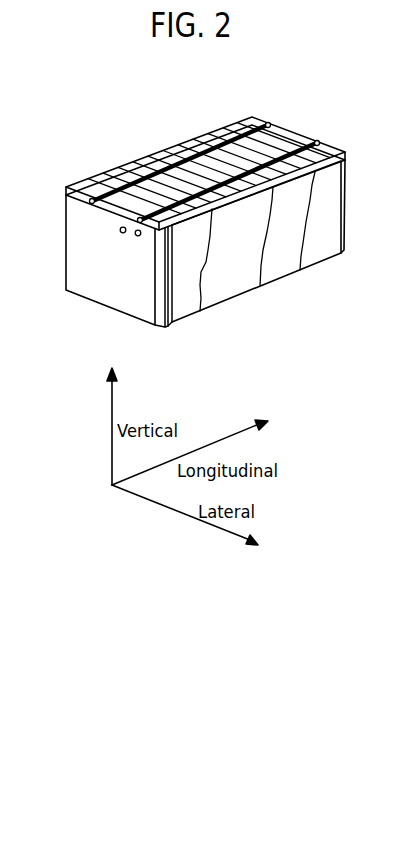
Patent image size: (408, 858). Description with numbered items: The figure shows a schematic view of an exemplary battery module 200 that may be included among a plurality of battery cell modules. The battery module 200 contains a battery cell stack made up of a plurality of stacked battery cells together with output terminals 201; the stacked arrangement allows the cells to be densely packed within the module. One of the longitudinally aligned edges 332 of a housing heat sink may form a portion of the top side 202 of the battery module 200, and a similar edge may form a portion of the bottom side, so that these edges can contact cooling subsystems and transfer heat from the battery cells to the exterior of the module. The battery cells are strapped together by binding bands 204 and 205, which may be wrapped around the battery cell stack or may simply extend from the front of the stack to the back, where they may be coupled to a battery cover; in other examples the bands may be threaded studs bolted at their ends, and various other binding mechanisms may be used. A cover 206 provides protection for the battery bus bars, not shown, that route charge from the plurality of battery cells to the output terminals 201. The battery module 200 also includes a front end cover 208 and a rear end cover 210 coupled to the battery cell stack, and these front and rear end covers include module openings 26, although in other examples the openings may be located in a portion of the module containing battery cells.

The battery module 200 is at (123, 109).
The module openings 26 is at (140, 218).
The top side 202 is at (213, 164).
The binding band 204 is at (262, 135).
The rear end cover 210 is at (345, 150).
The binding band 205 is at (316, 158).
The longitudinally aligned edge 332 is at (212, 206).
The output terminals 201 is at (138, 236).
The front end cover 208 is at (105, 307).
The cover 206 is at (190, 316).